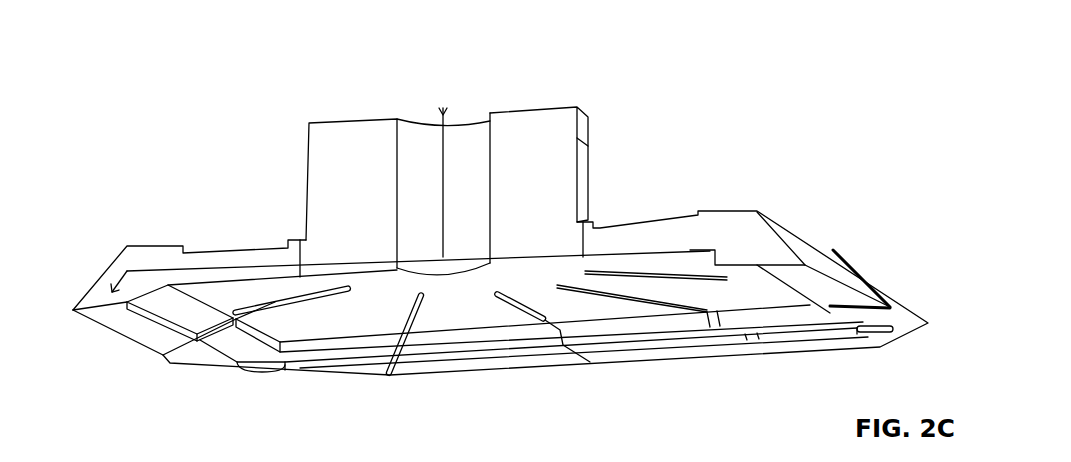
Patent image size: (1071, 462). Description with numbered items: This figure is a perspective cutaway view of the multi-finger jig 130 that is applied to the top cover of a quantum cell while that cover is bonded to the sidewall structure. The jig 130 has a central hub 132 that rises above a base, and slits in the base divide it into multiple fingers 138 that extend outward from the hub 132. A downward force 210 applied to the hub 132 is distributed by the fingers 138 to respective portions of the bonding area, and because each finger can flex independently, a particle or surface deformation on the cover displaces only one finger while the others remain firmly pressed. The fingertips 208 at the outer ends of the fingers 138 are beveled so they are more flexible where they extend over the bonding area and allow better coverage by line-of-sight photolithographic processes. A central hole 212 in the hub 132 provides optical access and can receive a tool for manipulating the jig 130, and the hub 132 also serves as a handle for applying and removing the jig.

The multi-finger jig 130 is at (593, 53).
The hub 132 is at (316, 183).
The fingers 138 is at (230, 247).
The fingertips 208 is at (447, 368).
The downward force 210 is at (410, 165).
The central hole 212 is at (463, 139).